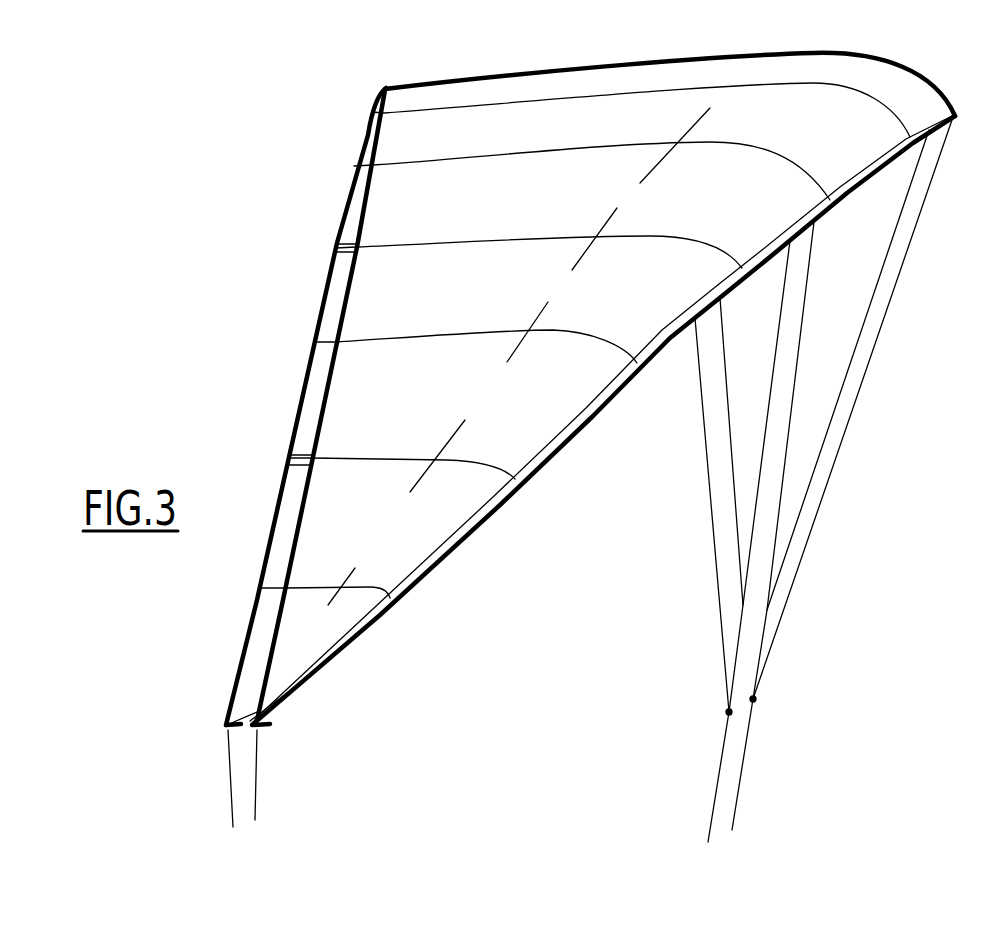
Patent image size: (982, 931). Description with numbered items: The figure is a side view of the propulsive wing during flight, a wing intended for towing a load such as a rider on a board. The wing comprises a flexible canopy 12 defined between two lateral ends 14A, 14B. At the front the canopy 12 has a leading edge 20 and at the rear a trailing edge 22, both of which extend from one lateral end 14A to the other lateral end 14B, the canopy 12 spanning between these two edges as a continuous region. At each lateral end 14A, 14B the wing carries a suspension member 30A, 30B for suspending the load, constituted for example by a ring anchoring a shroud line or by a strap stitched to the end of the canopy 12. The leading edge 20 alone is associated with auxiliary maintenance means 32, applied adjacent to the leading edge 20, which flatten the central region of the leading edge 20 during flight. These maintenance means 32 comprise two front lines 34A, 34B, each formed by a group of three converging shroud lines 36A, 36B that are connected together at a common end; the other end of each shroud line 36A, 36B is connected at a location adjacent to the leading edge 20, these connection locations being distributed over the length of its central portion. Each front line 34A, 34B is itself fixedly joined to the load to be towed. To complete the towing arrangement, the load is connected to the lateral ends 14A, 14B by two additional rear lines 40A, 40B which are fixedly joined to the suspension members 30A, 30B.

The flexible canopy 12 is at (613, 108).
The lateral end 14A is at (302, 720).
The lateral end 14B is at (218, 694).
The leading edge 20 is at (845, 194).
The trailing edge 22 is at (360, 154).
The suspension member 30A is at (258, 730).
The suspension member 30B is at (227, 730).
The auxiliary maintenance means 32 is at (800, 479).
The front line 34A is at (740, 788).
The front line 34B is at (718, 787).
The shroud lines 36A is at (782, 505).
The shroud lines 36B is at (760, 500).
The rear line 40A is at (257, 813).
The rear line 40B is at (230, 810).